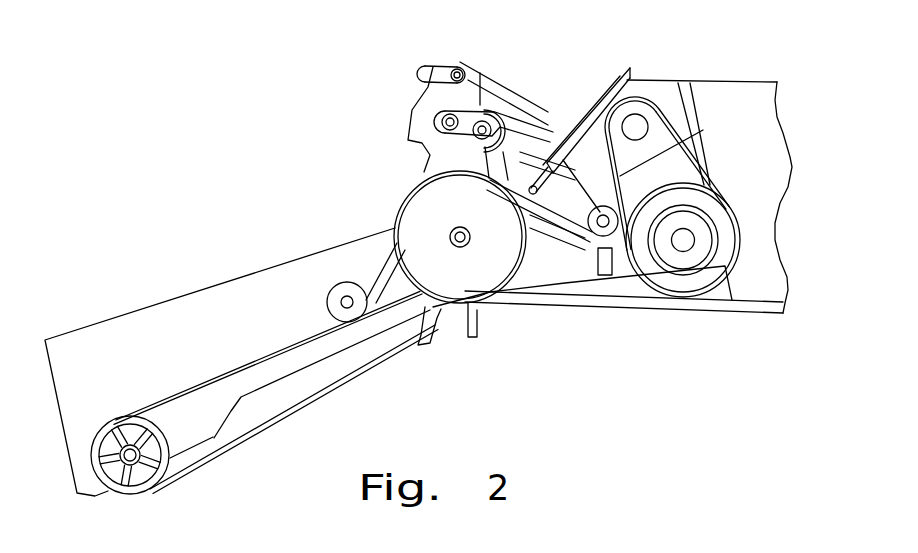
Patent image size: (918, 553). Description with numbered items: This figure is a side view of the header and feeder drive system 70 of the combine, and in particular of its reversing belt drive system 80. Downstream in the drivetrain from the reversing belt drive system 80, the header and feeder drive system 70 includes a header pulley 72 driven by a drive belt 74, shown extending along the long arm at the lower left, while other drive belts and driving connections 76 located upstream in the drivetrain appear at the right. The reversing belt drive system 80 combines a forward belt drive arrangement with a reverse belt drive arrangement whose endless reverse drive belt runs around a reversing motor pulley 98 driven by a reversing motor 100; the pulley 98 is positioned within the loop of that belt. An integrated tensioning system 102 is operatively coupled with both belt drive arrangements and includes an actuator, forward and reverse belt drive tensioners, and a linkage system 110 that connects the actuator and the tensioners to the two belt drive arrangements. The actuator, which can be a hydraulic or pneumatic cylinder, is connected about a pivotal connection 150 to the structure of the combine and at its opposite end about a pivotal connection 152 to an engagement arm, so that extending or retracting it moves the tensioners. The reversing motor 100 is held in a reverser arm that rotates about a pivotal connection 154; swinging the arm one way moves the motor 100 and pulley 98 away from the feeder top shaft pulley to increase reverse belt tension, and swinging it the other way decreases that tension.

The header and feeder drive system 70 is at (218, 215).
The header pulley 72 is at (150, 486).
The drive belt 74 is at (343, 382).
The drive belts and driving connections 76 is at (706, 142).
The reversing belt drive system 80 is at (373, 134).
The reversing motor pulley 98 is at (497, 102).
The reversing motor 100 is at (440, 160).
The integrated tensioning system 102 is at (586, 142).
The linkage system 110 is at (538, 245).
The pivotal connection 150 is at (562, 118).
The pivotal connection 152 is at (510, 202).
The pivotal connection 154 is at (445, 118).